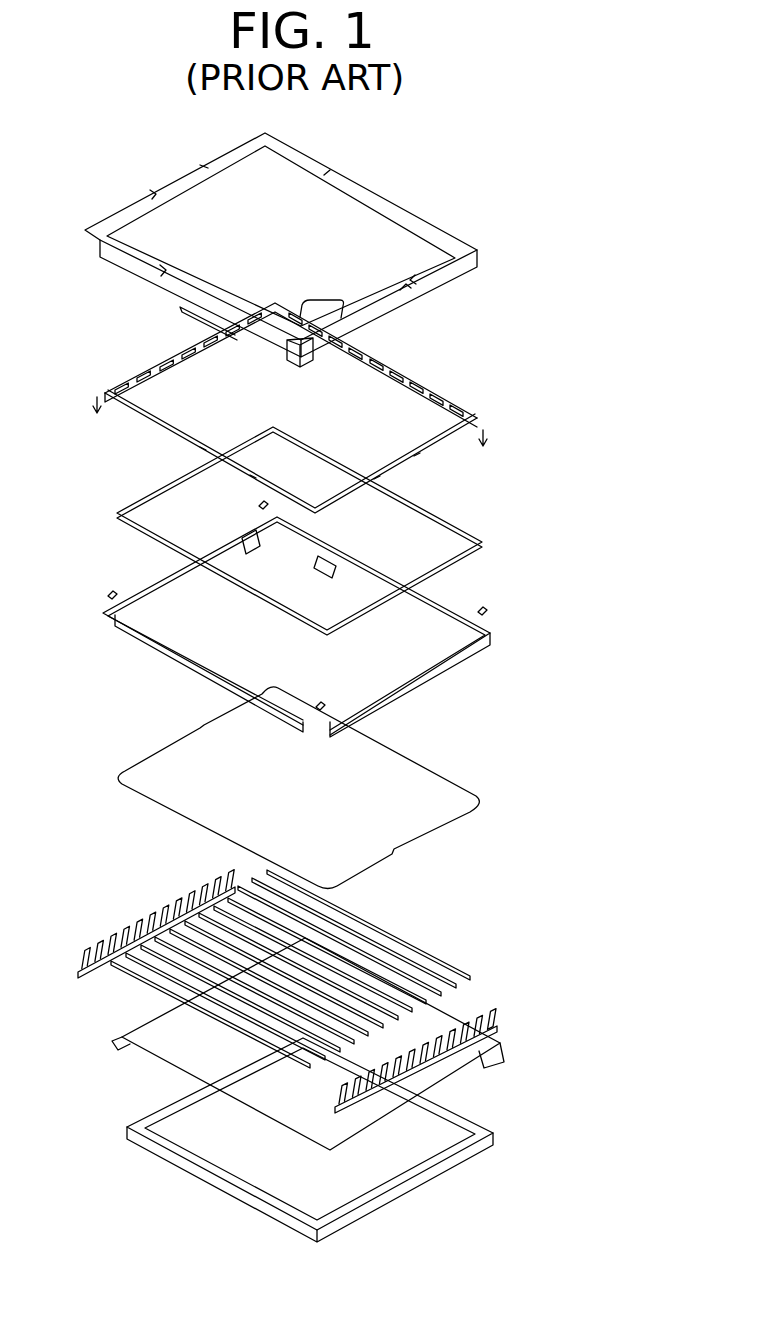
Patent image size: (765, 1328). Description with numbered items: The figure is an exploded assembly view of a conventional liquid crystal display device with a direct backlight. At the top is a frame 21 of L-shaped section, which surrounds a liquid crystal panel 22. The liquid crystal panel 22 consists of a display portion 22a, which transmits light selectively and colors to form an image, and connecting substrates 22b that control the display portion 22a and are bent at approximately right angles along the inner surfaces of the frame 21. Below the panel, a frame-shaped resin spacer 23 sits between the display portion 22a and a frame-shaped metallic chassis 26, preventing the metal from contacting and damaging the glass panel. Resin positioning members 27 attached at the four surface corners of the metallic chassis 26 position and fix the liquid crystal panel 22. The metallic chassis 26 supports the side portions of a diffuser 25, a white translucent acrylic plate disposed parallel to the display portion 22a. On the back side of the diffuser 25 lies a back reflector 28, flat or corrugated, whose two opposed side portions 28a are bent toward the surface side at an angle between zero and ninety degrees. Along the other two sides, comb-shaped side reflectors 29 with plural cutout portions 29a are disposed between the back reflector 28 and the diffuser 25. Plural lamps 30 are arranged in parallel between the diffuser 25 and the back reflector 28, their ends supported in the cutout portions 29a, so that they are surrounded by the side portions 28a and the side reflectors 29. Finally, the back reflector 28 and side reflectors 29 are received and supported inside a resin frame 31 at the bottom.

The frame 21 is at (462, 272).
The liquid crystal panel 22 is at (355, 406).
The display portion 22a is at (452, 456).
The connecting substrates 22b is at (152, 362).
The spacer 23 is at (462, 527).
The diffuser 25 is at (440, 790).
The metallic chassis 26 is at (470, 656).
The positioning members 27 is at (110, 590).
The back reflector 28 is at (450, 1077).
The side portions 28a is at (140, 1053).
The side reflectors 29 is at (200, 887).
The cutout portions 29a is at (485, 1010).
The lamps 30 is at (370, 925).
The resin frame 31 is at (473, 1153).